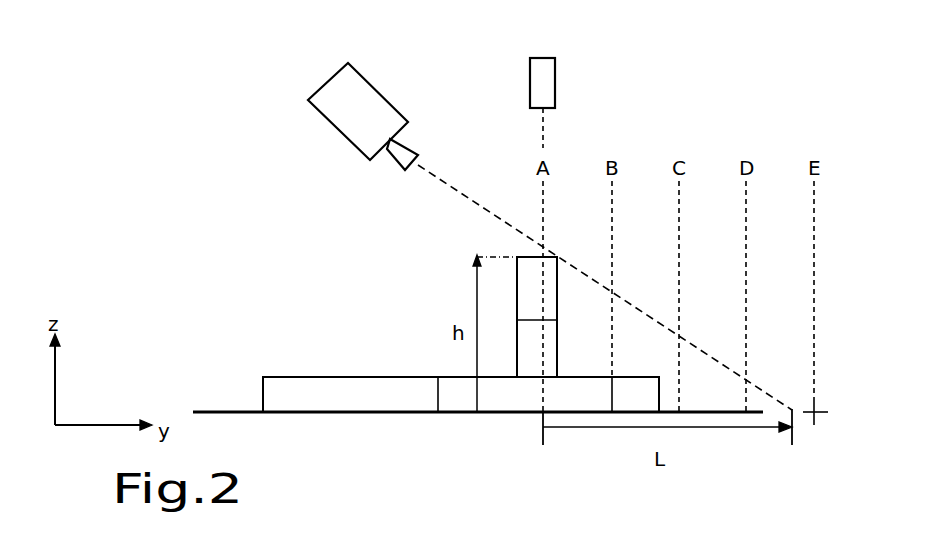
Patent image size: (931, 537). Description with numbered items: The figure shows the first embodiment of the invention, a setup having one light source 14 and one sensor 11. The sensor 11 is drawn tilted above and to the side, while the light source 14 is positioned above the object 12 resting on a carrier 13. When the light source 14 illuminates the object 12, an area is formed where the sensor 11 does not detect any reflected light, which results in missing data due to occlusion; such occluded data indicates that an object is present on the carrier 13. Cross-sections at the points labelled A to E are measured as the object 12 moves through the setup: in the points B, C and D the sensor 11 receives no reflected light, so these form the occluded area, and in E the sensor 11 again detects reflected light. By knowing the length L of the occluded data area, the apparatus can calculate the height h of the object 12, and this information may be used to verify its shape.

The sensor 11 is at (365, 102).
The object 12 is at (430, 358).
The table / carrier surface 13 is at (212, 410).
The light source 14 is at (552, 88).